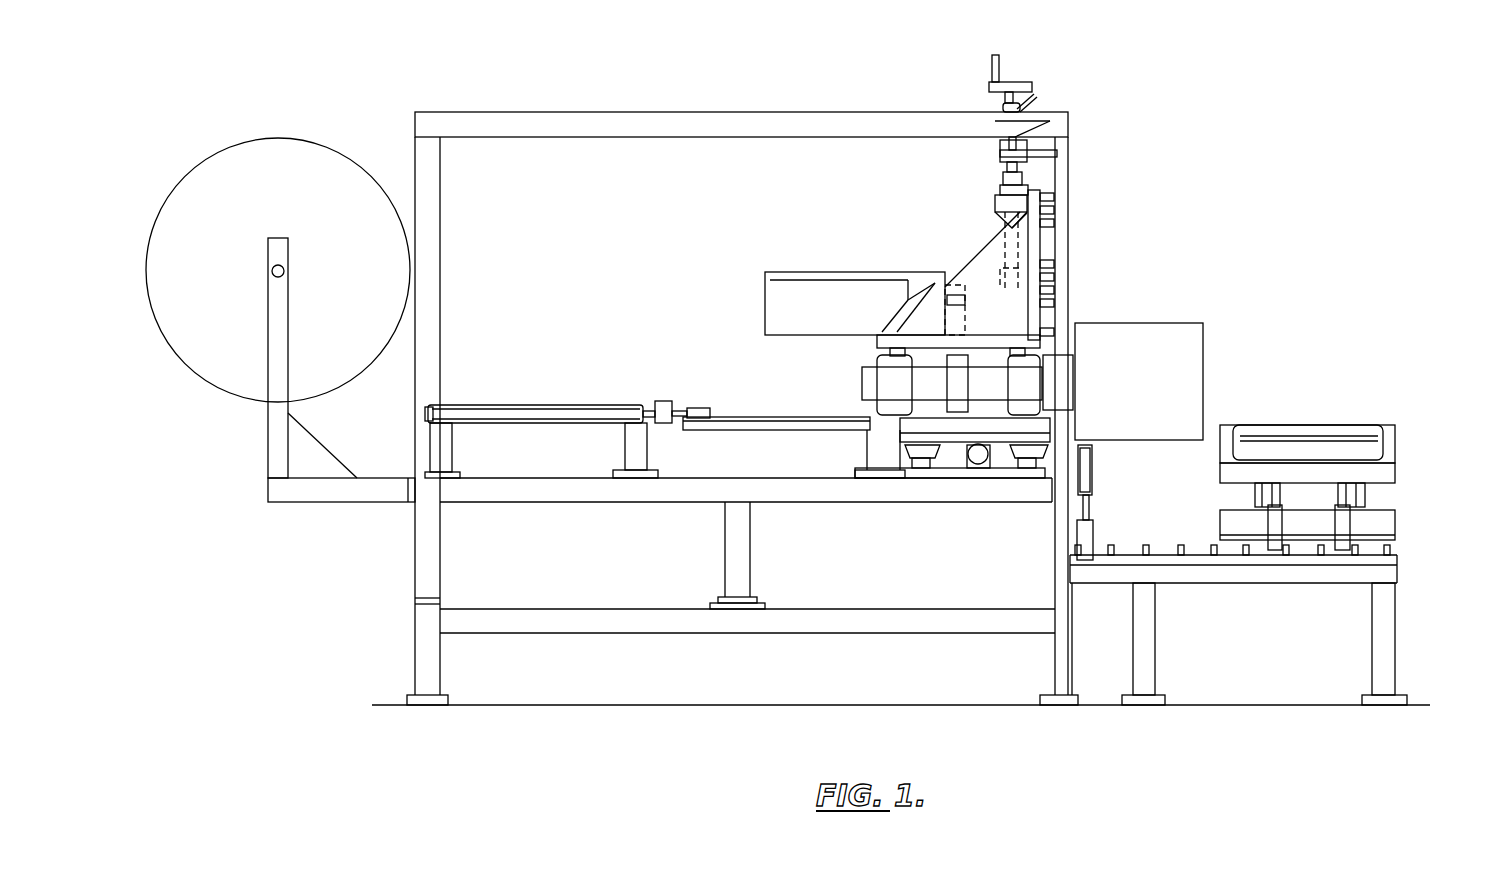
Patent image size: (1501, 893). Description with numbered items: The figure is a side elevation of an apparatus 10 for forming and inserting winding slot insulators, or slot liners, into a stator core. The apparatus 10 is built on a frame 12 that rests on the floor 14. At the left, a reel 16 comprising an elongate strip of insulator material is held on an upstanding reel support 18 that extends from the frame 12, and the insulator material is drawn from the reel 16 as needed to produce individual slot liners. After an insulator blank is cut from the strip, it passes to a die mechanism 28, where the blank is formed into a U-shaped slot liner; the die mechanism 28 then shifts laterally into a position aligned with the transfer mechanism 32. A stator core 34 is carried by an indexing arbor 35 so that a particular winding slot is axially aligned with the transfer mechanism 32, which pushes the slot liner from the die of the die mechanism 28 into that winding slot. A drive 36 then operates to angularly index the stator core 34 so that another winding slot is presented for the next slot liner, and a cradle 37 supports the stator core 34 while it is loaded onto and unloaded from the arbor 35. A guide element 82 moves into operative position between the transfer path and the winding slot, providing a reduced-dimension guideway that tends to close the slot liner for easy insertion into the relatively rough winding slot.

The apparatus 10 is at (1205, 185).
The frame 12 is at (836, 624).
The floor 14 is at (574, 705).
The reel 16 is at (277, 138).
The reel support 18 is at (277, 422).
The die mechanism 28 is at (983, 488).
The transfer mechanism 32 is at (783, 403).
The stator core 34 is at (1128, 322).
The indexing arbor 35 is at (1057, 385).
The drive 36 is at (829, 271).
The cradle 37 is at (1427, 430).
The guide element 82 is at (1100, 472).